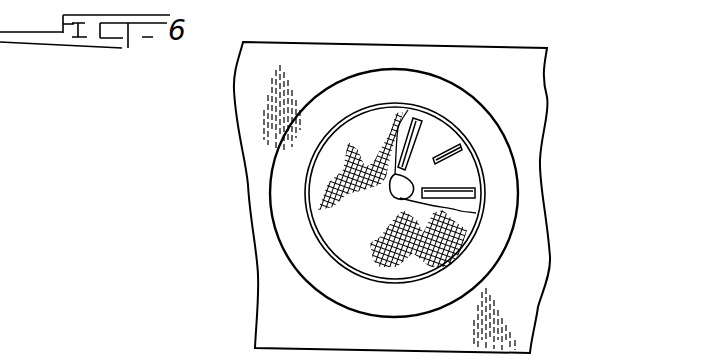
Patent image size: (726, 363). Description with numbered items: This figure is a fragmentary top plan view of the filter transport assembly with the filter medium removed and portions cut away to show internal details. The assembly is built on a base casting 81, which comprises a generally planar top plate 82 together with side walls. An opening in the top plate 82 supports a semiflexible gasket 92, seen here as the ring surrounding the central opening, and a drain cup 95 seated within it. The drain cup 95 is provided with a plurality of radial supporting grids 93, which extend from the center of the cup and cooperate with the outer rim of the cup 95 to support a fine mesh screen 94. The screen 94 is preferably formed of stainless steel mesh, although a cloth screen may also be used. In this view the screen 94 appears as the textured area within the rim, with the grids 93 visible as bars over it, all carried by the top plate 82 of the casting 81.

The base casting 81 is at (552, 85).
The top plate 82 is at (267, 118).
The semiflexible gasket 92 is at (493, 155).
The radial supporting grids 93 is at (418, 118).
The fine mesh screen 94 is at (358, 250).
The drain cup 95 is at (433, 147).